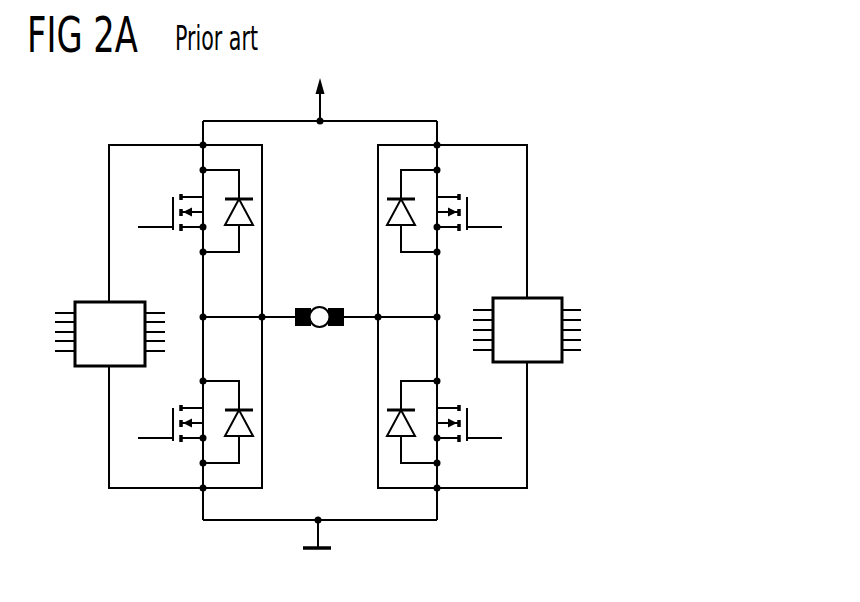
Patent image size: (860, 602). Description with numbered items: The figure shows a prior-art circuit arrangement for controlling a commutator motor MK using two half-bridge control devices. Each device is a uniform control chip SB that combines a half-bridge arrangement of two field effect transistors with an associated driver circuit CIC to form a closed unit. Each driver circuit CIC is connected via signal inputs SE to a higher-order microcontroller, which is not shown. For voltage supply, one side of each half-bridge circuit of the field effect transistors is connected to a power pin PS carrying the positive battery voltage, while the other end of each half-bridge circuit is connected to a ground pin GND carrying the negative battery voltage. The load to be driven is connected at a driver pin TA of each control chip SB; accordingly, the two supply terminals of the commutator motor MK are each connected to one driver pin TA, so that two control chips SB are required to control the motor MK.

The power pin PS is at (305, 97).
The ground pin GND is at (318, 553).
The control chip SB is at (152, 488).
The driver pin TA is at (262, 317).
The commutator motor MK is at (318, 327).
The driver circuit CIC is at (318, 316).
The signal inputs SE is at (317, 331).